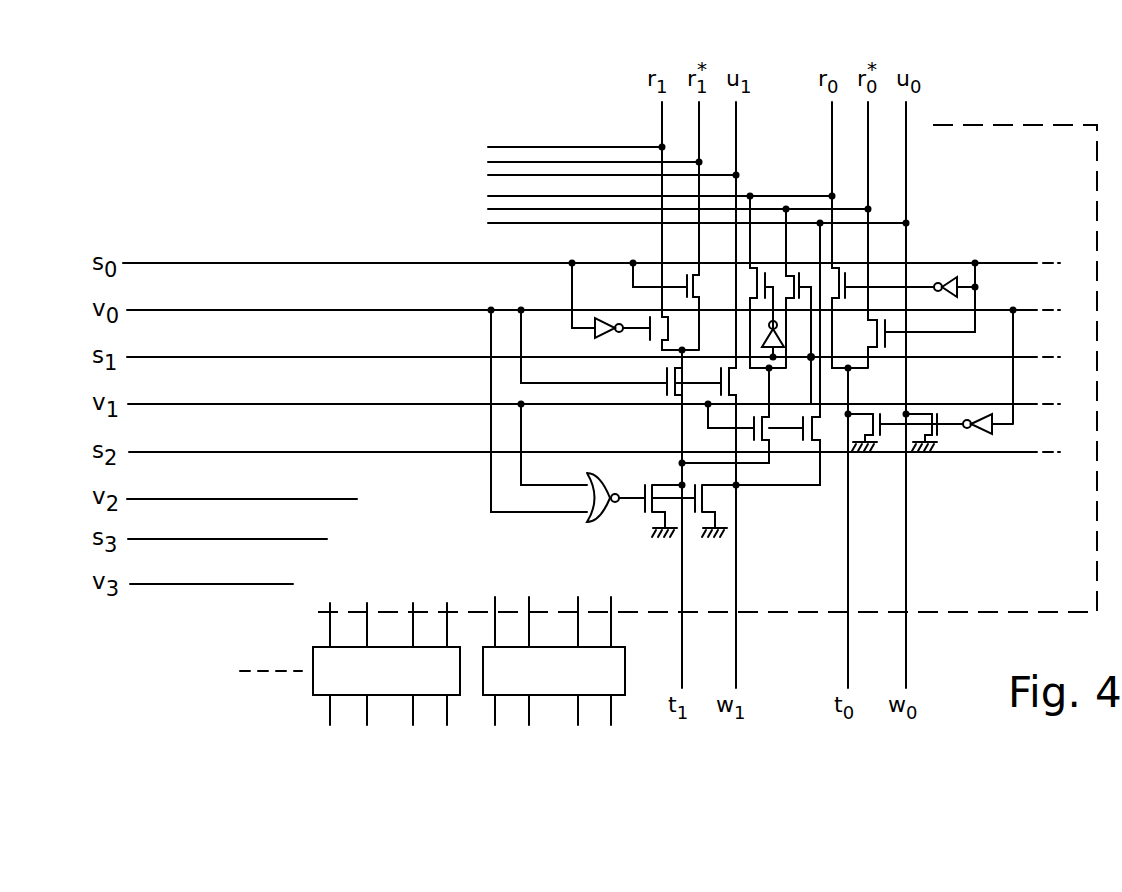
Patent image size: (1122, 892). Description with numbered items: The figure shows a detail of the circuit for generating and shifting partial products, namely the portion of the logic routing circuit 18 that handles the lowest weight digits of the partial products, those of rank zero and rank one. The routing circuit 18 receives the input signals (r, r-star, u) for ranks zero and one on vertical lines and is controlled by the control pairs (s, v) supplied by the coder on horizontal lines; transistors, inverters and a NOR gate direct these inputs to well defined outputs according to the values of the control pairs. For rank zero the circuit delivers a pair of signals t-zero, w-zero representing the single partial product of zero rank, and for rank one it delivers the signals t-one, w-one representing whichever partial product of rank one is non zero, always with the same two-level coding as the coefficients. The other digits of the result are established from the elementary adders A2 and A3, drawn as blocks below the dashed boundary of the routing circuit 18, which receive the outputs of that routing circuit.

The logic routing circuit 18 is at (1013, 125).
The elementary adder A3 is at (386, 664).
The elementary adder A2 is at (554, 661).